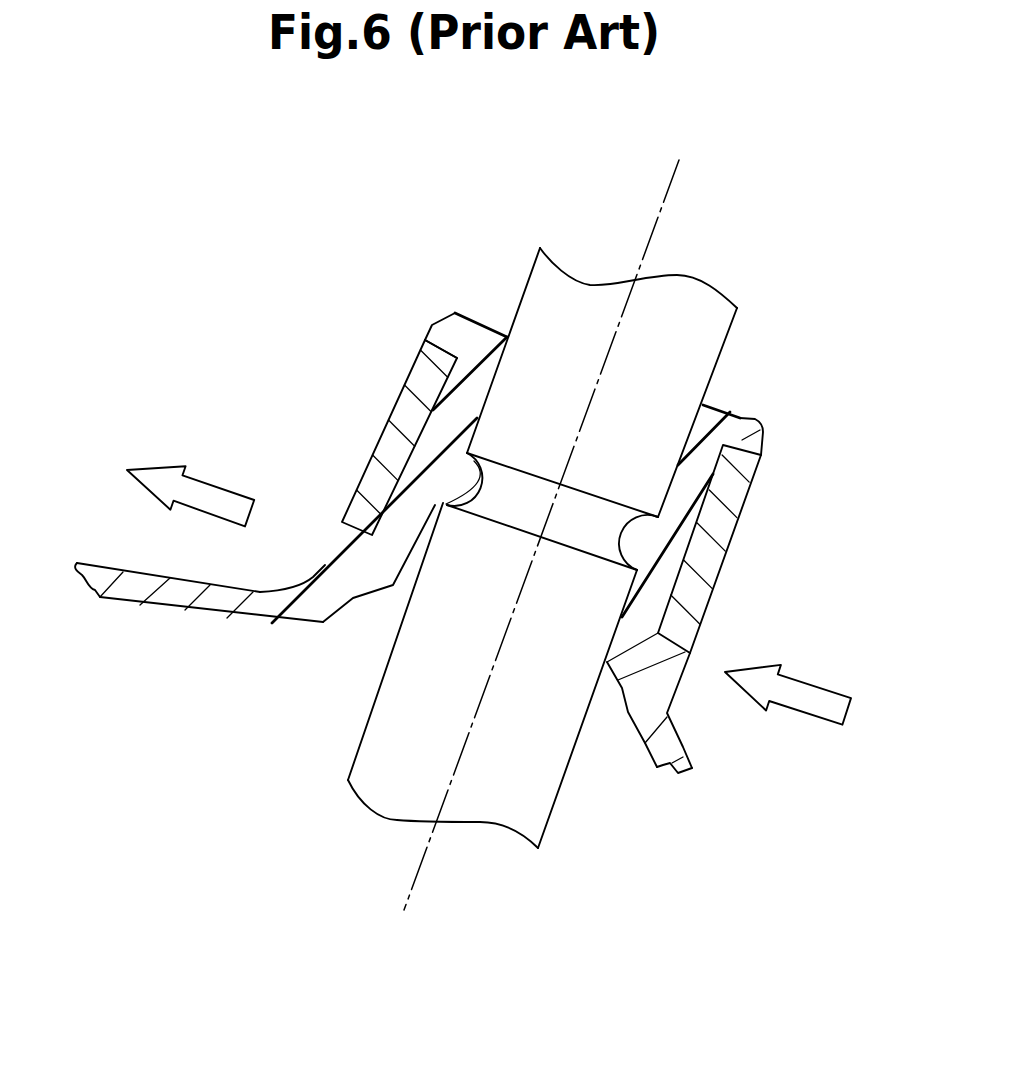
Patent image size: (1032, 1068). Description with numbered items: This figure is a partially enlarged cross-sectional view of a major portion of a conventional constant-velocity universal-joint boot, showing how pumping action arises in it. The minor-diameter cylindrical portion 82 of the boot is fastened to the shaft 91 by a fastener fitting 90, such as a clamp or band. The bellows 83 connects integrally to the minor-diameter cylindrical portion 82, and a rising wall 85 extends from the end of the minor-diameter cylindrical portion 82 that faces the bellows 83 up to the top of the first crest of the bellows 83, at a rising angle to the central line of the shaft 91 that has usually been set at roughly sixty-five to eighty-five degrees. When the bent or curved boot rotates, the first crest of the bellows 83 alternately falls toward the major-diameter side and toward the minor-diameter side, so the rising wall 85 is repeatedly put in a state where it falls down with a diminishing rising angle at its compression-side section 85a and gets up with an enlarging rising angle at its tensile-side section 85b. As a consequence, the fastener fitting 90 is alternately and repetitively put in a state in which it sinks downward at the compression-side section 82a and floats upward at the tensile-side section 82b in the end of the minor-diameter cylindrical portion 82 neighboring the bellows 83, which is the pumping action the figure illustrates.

The shaft 91 is at (728, 327).
The minor-diameter cylindrical portion 82 is at (473, 560).
The compression-side section 82a is at (722, 641).
The tensile-side section 82b is at (291, 536).
The fastener fitting 90 is at (738, 488).
The bellows 83 is at (117, 620).
The rising wall 85 is at (200, 661).
The compression-side section 85a is at (673, 748).
The tensile-side section 85b is at (259, 615).